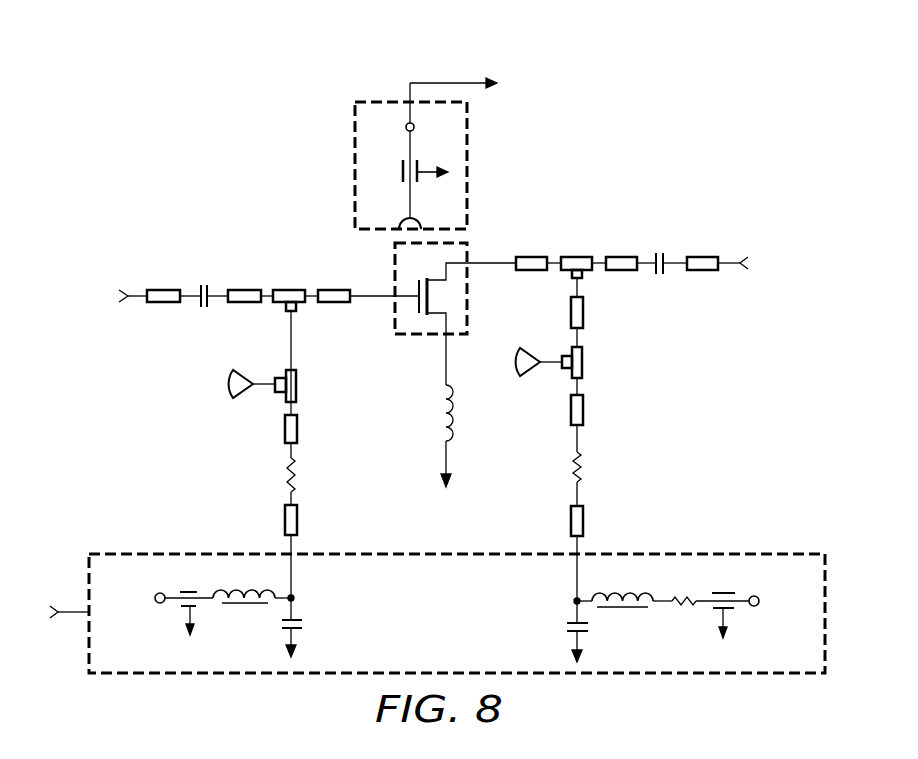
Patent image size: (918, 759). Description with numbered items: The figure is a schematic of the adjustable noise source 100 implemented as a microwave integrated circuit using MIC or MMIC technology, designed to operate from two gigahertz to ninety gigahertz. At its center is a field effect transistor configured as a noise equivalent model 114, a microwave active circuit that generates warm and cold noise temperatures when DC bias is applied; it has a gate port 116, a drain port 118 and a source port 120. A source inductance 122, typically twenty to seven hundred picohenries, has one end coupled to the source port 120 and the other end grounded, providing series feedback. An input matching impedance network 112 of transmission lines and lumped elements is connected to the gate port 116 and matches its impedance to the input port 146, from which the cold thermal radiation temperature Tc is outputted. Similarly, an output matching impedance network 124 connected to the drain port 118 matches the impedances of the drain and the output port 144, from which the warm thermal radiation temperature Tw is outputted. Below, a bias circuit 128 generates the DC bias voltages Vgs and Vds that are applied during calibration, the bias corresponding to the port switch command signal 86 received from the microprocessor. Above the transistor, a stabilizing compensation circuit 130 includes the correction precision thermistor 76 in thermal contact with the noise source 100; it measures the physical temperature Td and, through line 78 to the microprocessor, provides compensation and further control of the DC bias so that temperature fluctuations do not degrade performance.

The line 78 is at (452, 83).
The stabilizing compensation circuit 130 is at (354, 161).
The correction precision thermistor 76 is at (401, 223).
The noise source 100 is at (628, 373).
The output matching impedance network 124 is at (580, 246).
The output port 144 is at (750, 263).
The input matching impedance network 112 is at (242, 278).
The noise equivalent model 114 is at (424, 313).
The gate port 116 is at (395, 298).
The drain port 118 is at (467, 263).
The source port 120 is at (445, 338).
The source inductance 122 is at (458, 436).
The input port 146 is at (118, 296).
The port switch command signal 86 is at (72, 613).
The bias circuit 128 is at (477, 625).